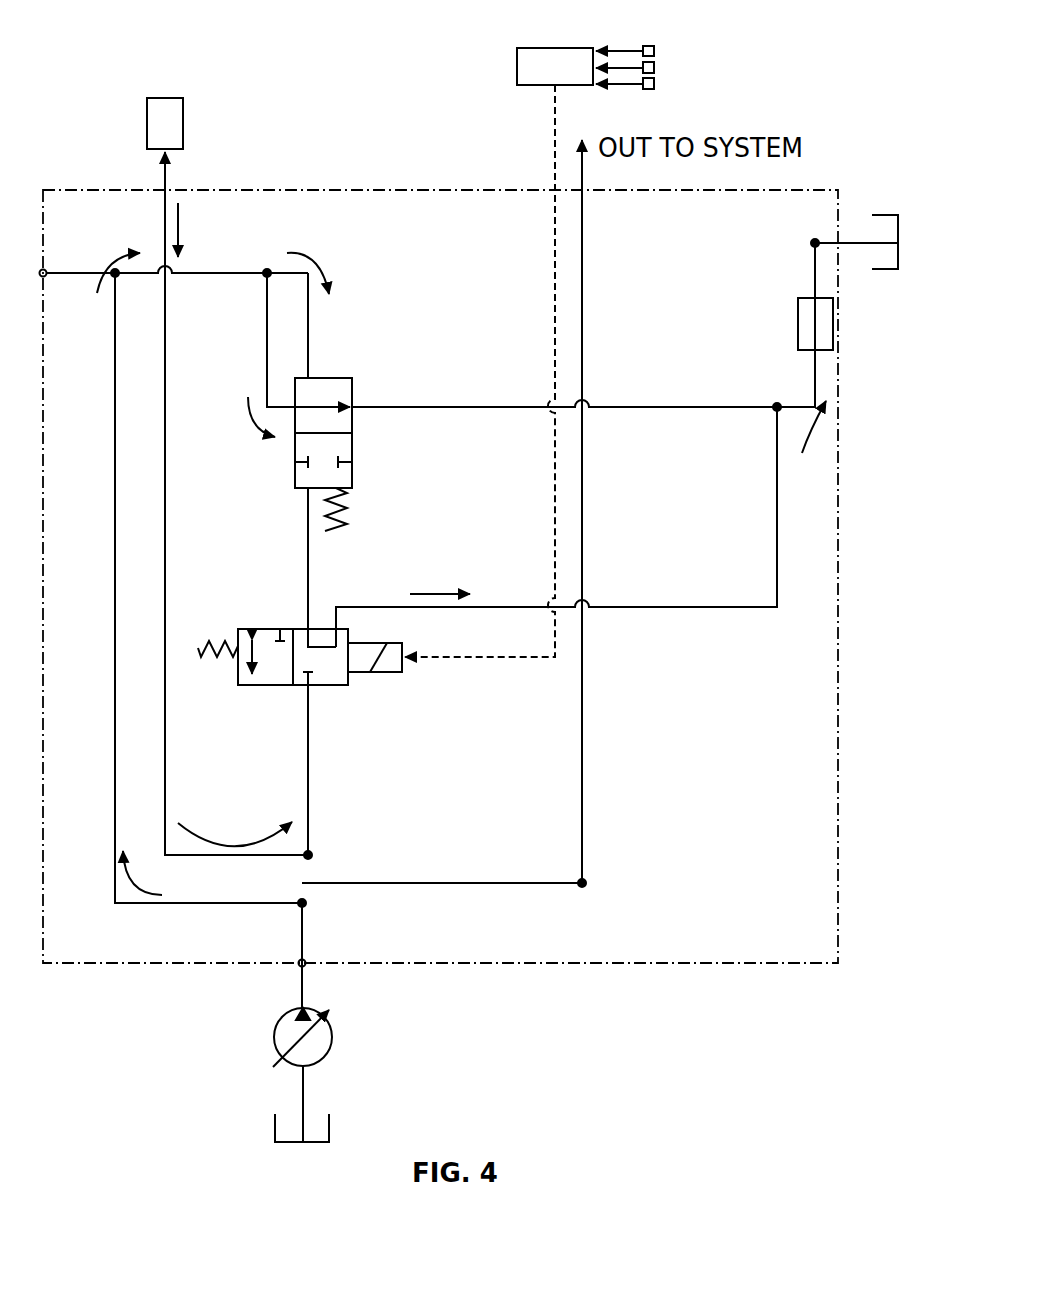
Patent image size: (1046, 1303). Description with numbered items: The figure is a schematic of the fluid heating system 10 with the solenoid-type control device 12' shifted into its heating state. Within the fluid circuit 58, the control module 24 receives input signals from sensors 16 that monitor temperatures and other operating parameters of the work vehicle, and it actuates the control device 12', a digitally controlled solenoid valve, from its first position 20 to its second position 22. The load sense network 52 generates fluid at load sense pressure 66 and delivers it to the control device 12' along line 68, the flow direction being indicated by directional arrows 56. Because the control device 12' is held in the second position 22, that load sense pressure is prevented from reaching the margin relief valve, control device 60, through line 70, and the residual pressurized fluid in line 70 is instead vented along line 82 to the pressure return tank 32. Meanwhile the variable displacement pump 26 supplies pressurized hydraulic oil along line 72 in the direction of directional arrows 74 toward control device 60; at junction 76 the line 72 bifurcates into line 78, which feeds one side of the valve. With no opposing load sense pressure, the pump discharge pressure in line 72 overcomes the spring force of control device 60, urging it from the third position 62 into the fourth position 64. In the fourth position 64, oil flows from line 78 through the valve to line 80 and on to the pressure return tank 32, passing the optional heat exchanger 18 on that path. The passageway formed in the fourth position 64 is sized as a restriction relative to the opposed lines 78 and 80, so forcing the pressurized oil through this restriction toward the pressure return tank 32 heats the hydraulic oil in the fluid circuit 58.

The fluid heating system 10 is at (821, 80).
The control device 12' is at (391, 682).
The sensors 16 is at (654, 47).
The heat exchanger 18 is at (798, 323).
The first position 20 is at (267, 685).
The second position 22 is at (320, 687).
The control module 24 is at (517, 70).
The pump 26 is at (332, 1038).
The pressure return tank 32 is at (885, 269).
The load sense network 52 is at (183, 123).
The directional arrows 56 is at (178, 210).
The fluid circuit 58 is at (770, 1006).
The control device 60 is at (331, 378).
The third position 62 is at (356, 448).
The fourth position 64 is at (356, 389).
The load sense pressure 66 is at (160, 157).
The line 68 is at (163, 230).
The line 70 is at (313, 560).
The line 72 is at (308, 325).
The directional arrows 74 is at (102, 265).
The junction 76 is at (268, 271).
The line 78 is at (267, 368).
The line 80 is at (668, 405).
The line 82 is at (613, 605).